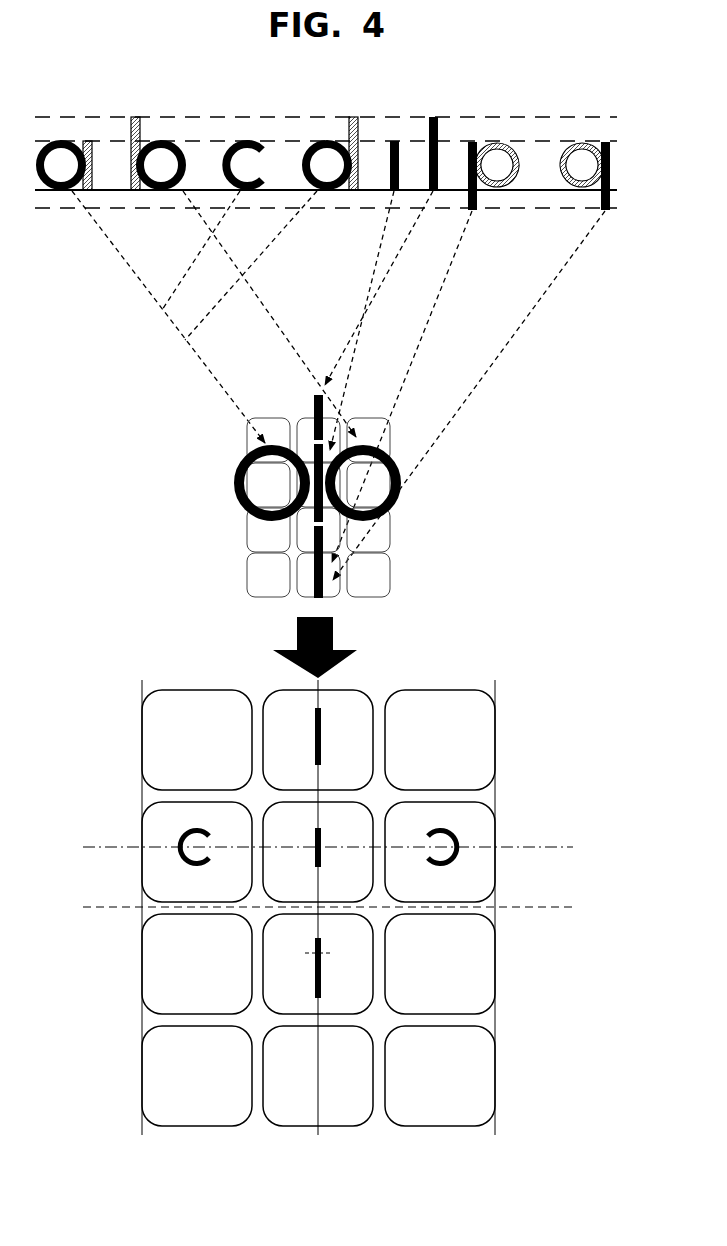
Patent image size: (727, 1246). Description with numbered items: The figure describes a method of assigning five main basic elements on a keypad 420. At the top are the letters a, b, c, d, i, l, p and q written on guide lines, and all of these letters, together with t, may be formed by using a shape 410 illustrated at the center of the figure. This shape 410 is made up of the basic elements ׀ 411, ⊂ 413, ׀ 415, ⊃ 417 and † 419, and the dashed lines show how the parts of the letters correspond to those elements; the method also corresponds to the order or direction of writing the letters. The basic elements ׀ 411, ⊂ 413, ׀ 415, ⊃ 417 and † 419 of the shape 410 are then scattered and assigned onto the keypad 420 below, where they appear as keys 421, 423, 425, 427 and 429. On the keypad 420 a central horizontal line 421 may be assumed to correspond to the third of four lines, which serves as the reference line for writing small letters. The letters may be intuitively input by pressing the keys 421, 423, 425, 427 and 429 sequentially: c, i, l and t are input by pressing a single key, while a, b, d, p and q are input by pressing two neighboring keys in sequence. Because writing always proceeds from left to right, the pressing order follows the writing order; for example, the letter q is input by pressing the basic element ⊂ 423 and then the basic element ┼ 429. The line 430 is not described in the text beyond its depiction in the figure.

The shape 410 is at (373, 492).
The basic element ׀ 411 is at (315, 398).
The basic element ⊂ 413 is at (233, 487).
The basic element ׀ 415 is at (322, 517).
The basic element ⊃ 417 is at (405, 483).
The basic element † 419 is at (322, 543).
The keypad 420 is at (334, 874).
The key 421 is at (343, 688).
The key 423 is at (142, 830).
The key 425 is at (372, 802).
The key 427 is at (495, 828).
The key 429 is at (372, 968).
The baseline 430 is at (528, 907).